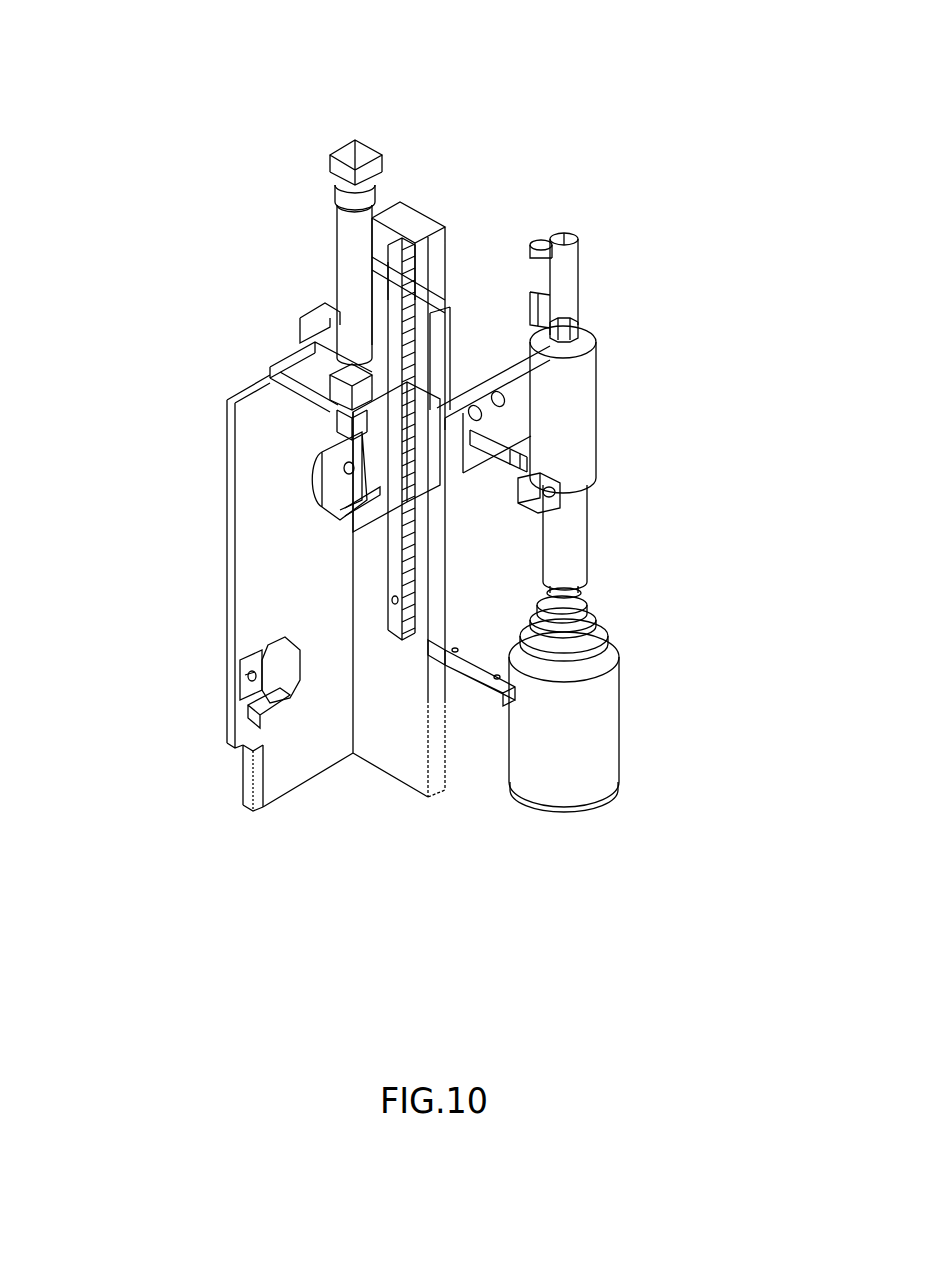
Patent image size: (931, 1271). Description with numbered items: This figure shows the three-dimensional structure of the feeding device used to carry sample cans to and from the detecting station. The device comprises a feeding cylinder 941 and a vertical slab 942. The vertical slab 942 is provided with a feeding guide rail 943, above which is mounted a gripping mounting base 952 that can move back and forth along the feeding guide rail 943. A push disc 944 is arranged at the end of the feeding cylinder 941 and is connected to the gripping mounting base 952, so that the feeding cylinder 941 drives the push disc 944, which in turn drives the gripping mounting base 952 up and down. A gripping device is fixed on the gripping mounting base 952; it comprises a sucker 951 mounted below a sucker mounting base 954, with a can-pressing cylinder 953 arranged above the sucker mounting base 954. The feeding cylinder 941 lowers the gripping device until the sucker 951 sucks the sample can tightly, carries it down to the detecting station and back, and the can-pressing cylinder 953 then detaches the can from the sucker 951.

The feeding cylinder 941 is at (338, 300).
The vertical slab 942 is at (402, 768).
The feeding guide rail 943 is at (412, 292).
The push disc 944 is at (334, 472).
The sucker 951 is at (589, 616).
The gripping mounting base 952 is at (488, 382).
The can-pressing cylinder 953 is at (579, 290).
The sucker mounting base 954 is at (575, 388).